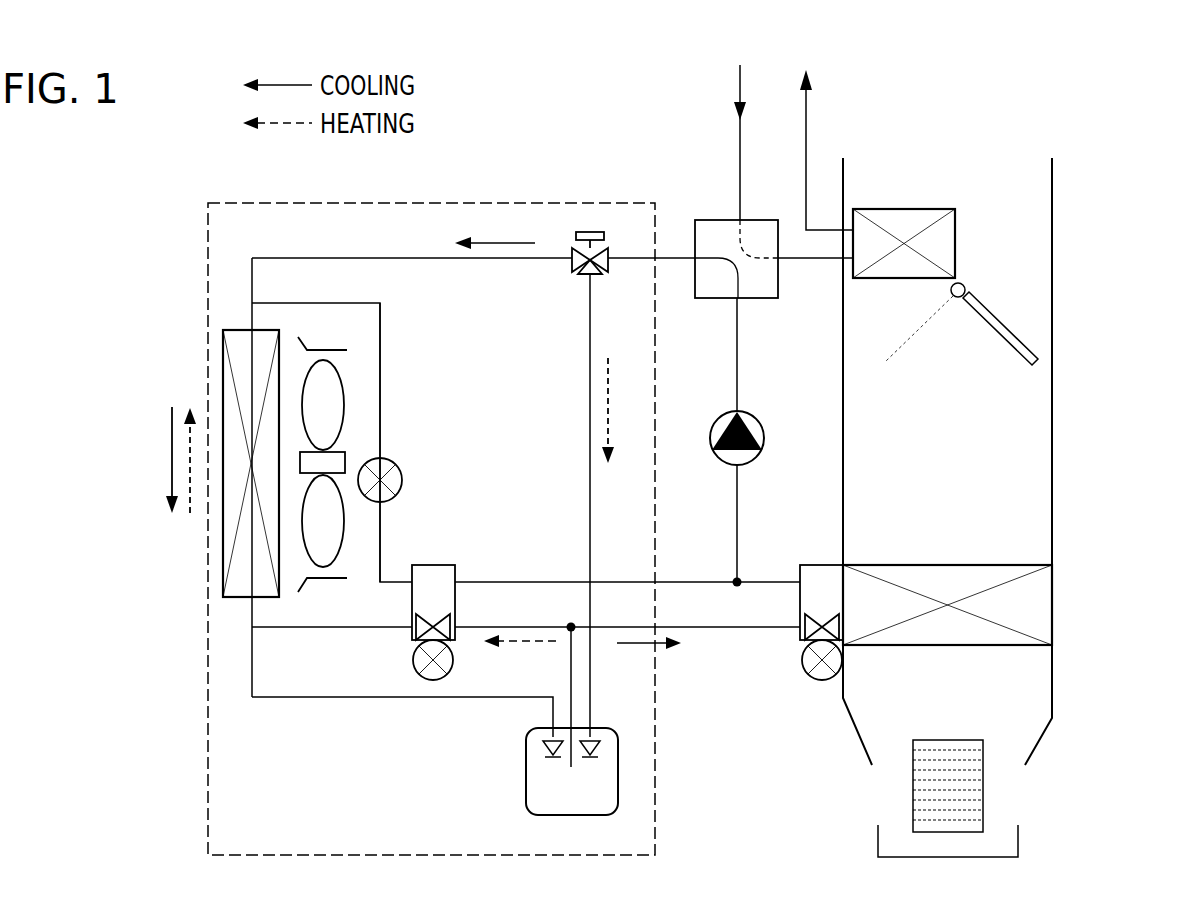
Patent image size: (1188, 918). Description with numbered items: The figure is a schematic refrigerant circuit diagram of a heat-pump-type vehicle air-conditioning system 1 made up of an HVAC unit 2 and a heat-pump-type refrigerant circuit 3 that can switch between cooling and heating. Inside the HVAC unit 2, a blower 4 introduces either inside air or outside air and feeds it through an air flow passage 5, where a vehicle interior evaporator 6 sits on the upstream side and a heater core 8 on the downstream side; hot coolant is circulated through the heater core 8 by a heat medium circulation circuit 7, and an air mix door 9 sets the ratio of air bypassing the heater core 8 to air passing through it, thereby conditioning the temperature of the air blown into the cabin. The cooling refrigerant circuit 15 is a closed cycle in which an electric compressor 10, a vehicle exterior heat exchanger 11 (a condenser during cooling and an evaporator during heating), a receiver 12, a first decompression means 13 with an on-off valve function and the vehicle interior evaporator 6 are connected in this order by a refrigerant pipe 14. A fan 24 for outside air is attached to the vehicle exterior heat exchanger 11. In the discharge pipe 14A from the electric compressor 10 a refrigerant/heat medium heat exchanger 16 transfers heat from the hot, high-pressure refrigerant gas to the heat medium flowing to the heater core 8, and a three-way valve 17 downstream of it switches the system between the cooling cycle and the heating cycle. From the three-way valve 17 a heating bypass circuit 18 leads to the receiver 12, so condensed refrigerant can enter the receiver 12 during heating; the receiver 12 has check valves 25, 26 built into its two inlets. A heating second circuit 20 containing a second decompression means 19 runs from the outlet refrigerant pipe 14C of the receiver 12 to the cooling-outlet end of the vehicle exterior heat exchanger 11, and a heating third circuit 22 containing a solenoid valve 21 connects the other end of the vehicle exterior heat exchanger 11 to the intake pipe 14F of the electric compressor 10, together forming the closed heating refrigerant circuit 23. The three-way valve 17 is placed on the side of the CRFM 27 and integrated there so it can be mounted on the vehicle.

The heat-pump-type vehicle air-conditioning system 1 is at (580, 118).
The HVAC unit 2 is at (1068, 428).
The heat-pump-type refrigerant circuit 3 is at (284, 235).
The blower 4 is at (985, 788).
The air flow passage 5 is at (1010, 474).
The vehicle interior evaporator 6 is at (1040, 608).
The heat medium circulation circuit 7 is at (745, 165).
The heater core 8 is at (902, 208).
The air mix door 9 is at (1006, 330).
The electric compressor 10 is at (766, 438).
The vehicle exterior heat exchanger 11 is at (222, 559).
The receiver 12 is at (620, 797).
The first decompression means 13 is at (798, 606).
The refrigerant pipe 14 is at (365, 256).
The discharge pipe 14A is at (740, 352).
The outlet refrigerant pipe 14C is at (569, 675).
The intake pipe 14F is at (740, 510).
The cooling refrigerant circuit 15 is at (400, 713).
The refrigerant/heat medium heat exchanger 16 is at (708, 219).
The three-way valve 17 is at (590, 230).
The heating bypass circuit 18 is at (588, 429).
The second decompression means 19 is at (456, 603).
The heating second circuit 20 is at (318, 630).
The solenoid valve 21 is at (402, 480).
The heating third circuit 22 is at (382, 370).
The heating refrigerant circuit 23 is at (398, 327).
The fan 24 is at (325, 402).
The check valve 25 is at (603, 745).
The check valve 26 is at (541, 749).
The CRFM 27 is at (207, 731).